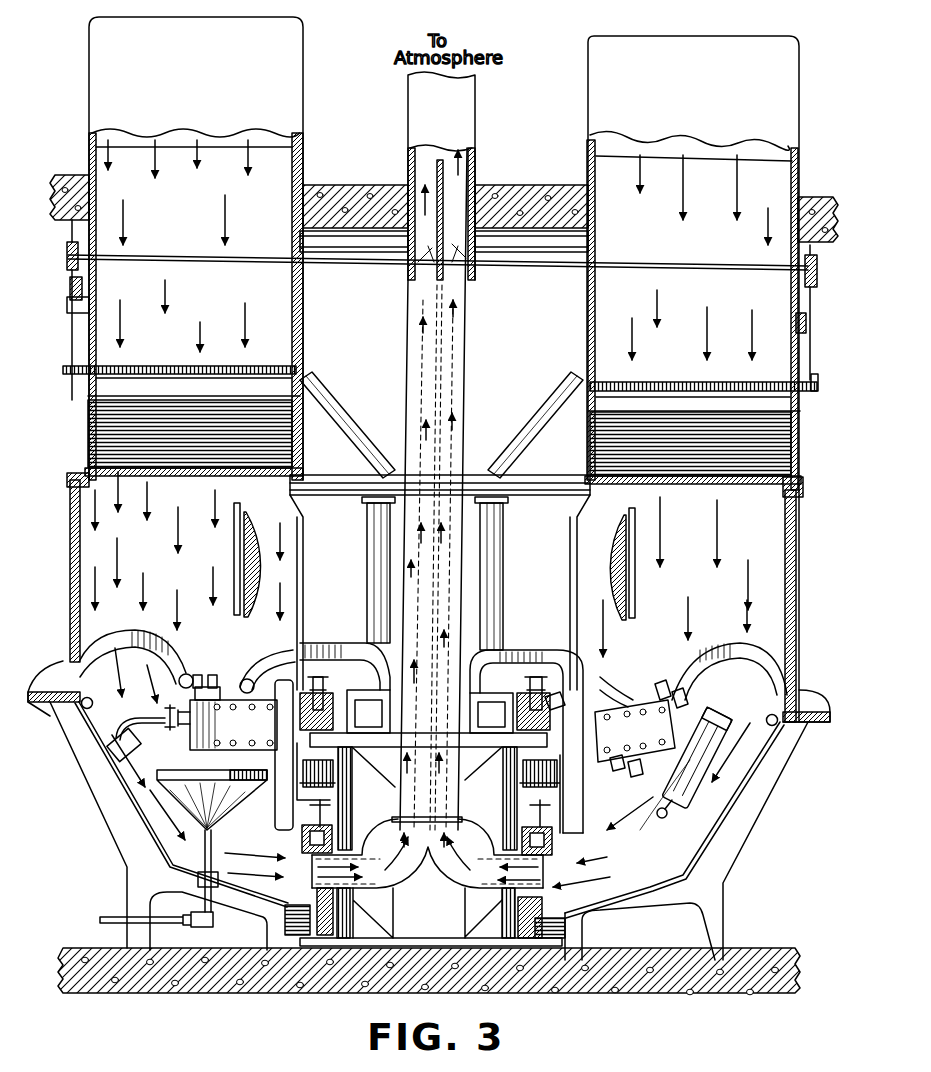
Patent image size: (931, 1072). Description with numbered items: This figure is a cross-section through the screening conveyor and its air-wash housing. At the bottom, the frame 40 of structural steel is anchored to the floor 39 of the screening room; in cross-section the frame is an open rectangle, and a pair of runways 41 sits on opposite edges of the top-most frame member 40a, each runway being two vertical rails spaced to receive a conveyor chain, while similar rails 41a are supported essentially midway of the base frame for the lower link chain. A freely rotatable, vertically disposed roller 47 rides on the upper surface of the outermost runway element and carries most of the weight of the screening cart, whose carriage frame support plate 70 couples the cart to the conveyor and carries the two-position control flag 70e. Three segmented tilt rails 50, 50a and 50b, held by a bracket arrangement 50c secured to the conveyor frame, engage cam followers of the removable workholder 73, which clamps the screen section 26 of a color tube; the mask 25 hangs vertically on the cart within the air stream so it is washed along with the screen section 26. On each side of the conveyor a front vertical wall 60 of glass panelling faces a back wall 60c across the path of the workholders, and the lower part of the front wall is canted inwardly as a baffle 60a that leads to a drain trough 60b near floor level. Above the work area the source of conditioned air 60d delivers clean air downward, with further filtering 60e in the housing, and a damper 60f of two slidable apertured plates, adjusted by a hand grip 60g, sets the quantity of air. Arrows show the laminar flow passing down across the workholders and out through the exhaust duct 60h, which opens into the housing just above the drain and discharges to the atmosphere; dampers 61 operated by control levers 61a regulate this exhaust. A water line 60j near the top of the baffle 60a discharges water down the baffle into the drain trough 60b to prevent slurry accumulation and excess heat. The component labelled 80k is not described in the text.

The source of conditioned air 60d is at (303, 88).
The dampers 61 is at (407, 278).
The control levers 61a is at (343, 263).
The damper 60f is at (303, 349).
The hand grip 60g is at (303, 370).
The filtering 60e is at (290, 440).
The front vertical wall 60 is at (75, 567).
The mask 25 is at (260, 537).
The back wall 60c is at (300, 557).
The control member or flag 70e is at (337, 685).
The bracket arrangement 50c is at (123, 640).
The tilt rail 50a is at (190, 673).
The tilt rail 50 is at (247, 677).
The tilt rail 50b is at (173, 730).
The valve 80k is at (520, 683).
The roller 47 is at (553, 703).
The runways 41 is at (337, 720).
The top-most frame member 40a is at (487, 748).
The frame 40 is at (343, 792).
The carriage frame support plate 70 is at (580, 803).
The rails 41a is at (333, 837).
The exhaust duct 60h is at (436, 885).
The drain trough 60b is at (295, 913).
The baffle 60a is at (105, 790).
The water line 60j is at (84, 710).
The screen section 26 is at (150, 805).
The workholder 73 is at (682, 733).
The floor 39 is at (207, 980).